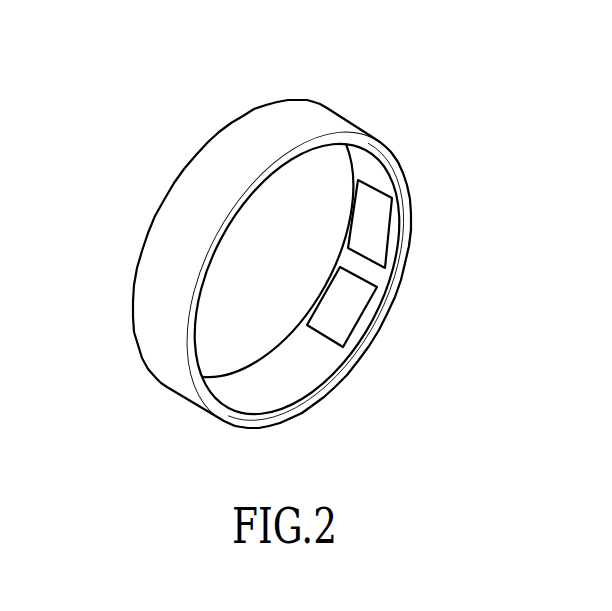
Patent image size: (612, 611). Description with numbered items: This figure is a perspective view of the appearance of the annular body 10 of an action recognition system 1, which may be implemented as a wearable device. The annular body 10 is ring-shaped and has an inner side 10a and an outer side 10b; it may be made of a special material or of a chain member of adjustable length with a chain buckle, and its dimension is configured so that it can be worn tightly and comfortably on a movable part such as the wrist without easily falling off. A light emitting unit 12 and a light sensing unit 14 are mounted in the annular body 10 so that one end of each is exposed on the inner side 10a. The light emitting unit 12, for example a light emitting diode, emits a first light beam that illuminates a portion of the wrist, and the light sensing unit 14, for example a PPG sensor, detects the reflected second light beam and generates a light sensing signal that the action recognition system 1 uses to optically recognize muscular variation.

The action recognition system 1 is at (127, 53).
The annular body 10 is at (176, 188).
The inner side 10a is at (300, 373).
The outer side 10b is at (170, 252).
The light emitting unit 12 is at (373, 225).
The light sensing unit 14 is at (347, 305).